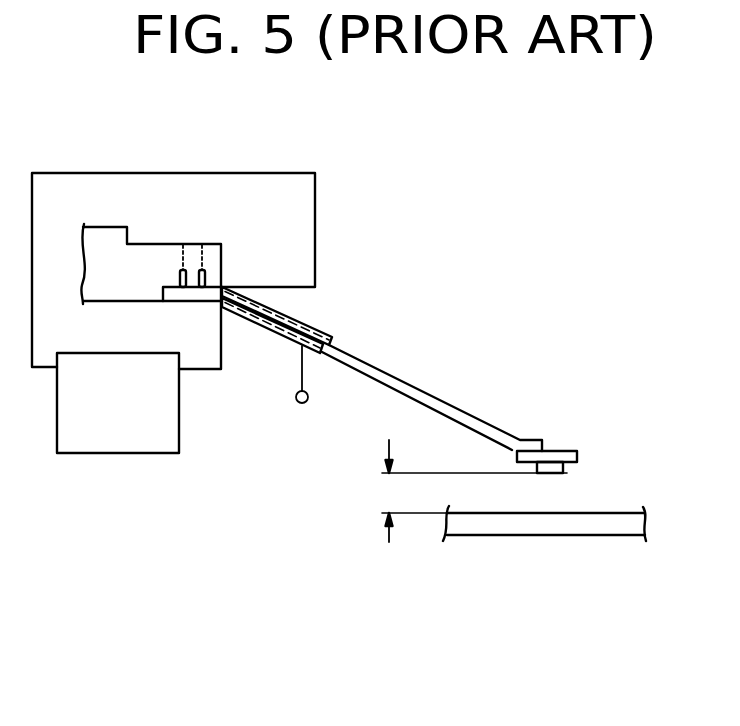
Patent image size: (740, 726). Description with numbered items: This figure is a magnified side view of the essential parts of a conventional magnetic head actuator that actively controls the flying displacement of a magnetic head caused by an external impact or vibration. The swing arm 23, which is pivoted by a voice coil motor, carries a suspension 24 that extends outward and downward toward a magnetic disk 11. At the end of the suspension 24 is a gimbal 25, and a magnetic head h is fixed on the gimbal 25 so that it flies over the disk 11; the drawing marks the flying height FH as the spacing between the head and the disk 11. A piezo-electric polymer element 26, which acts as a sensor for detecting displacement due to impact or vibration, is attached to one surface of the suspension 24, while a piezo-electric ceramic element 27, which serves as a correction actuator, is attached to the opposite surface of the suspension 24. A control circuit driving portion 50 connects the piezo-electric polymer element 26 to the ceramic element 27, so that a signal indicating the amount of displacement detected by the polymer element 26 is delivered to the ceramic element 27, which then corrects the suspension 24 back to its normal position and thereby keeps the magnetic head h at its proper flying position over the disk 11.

The magnetic disk 11 is at (552, 518).
The swing arm 23 is at (155, 254).
The suspension 24 is at (438, 401).
The gimbal 25 is at (558, 457).
The piezo-electric polymer element 26 is at (310, 323).
The piezo-electric ceramic element 27 is at (280, 333).
The control circuit driving portion 50 is at (112, 453).
The magnetic head h is at (566, 470).
The flying height FH is at (392, 491).